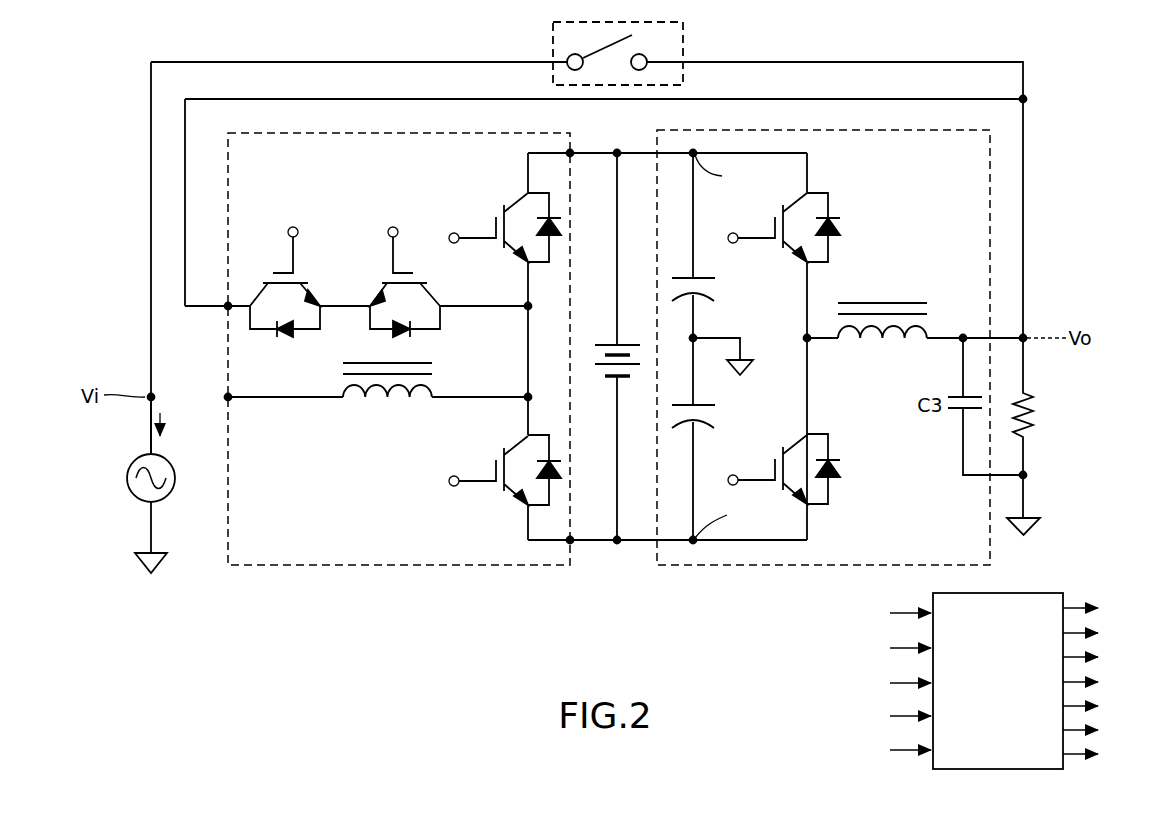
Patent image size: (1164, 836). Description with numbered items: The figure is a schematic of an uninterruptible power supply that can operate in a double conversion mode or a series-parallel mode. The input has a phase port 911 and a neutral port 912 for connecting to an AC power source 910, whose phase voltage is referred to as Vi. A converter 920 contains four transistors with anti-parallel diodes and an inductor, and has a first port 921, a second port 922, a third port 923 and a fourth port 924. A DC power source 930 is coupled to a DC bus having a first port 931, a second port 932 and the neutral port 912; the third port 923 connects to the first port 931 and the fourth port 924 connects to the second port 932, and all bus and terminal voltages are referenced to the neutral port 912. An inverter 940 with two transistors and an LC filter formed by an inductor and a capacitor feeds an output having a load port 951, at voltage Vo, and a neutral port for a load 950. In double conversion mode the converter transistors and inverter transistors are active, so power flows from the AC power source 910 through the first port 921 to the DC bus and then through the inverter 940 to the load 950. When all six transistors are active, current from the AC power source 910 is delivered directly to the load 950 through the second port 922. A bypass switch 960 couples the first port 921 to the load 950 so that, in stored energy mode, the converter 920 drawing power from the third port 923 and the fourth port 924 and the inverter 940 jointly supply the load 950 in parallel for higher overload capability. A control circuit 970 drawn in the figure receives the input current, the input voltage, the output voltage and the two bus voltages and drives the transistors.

The AC power source 910 is at (127, 485).
The phase port 911 is at (150, 435).
The neutral port 912 is at (148, 530).
The converter 920 is at (333, 567).
The first port of converter 921 is at (230, 400).
The second port of converter 922 is at (228, 309).
The third port of converter 923 is at (572, 151).
The fourth port of converter 924 is at (572, 543).
The DC power source 930 is at (602, 342).
The first port of DC bus 931 is at (620, 151).
The second port of DC bus 932 is at (620, 543).
The inverter 940 is at (787, 567).
The load 950 is at (1035, 420).
The load port 951 is at (962, 335).
The bypass switch 960 is at (684, 34).
The control circuit 970 is at (1040, 591).